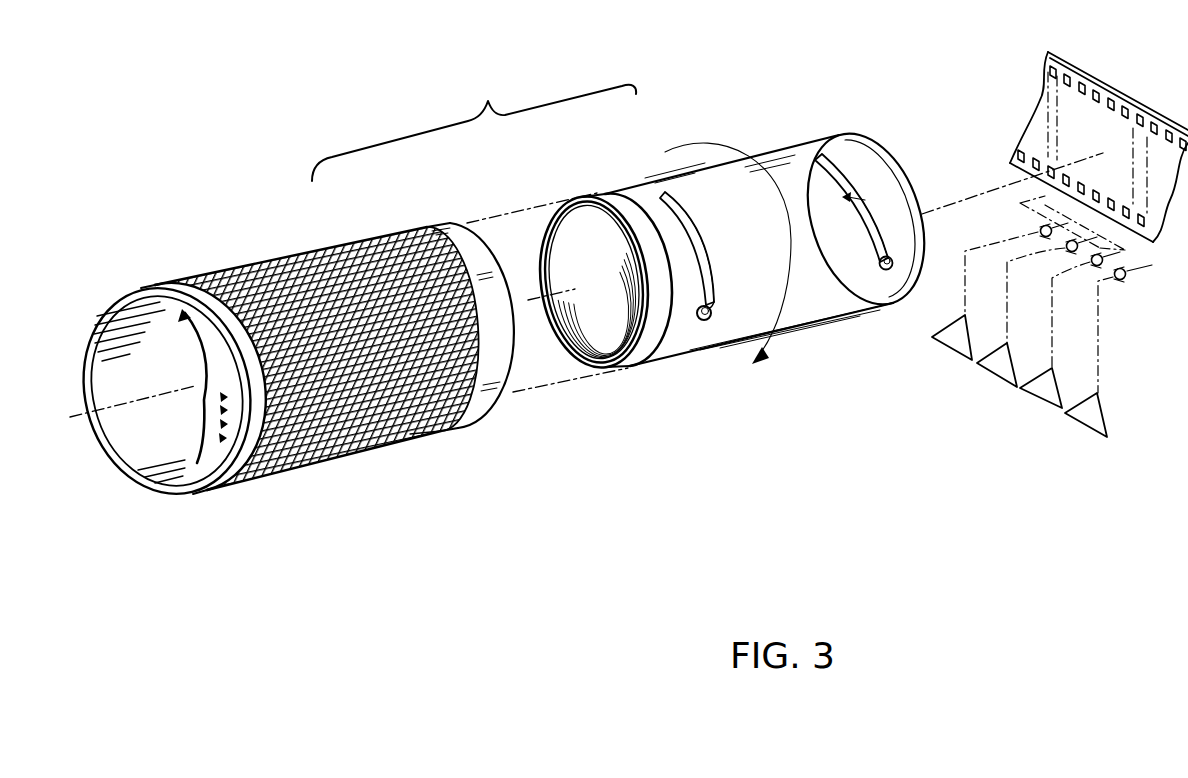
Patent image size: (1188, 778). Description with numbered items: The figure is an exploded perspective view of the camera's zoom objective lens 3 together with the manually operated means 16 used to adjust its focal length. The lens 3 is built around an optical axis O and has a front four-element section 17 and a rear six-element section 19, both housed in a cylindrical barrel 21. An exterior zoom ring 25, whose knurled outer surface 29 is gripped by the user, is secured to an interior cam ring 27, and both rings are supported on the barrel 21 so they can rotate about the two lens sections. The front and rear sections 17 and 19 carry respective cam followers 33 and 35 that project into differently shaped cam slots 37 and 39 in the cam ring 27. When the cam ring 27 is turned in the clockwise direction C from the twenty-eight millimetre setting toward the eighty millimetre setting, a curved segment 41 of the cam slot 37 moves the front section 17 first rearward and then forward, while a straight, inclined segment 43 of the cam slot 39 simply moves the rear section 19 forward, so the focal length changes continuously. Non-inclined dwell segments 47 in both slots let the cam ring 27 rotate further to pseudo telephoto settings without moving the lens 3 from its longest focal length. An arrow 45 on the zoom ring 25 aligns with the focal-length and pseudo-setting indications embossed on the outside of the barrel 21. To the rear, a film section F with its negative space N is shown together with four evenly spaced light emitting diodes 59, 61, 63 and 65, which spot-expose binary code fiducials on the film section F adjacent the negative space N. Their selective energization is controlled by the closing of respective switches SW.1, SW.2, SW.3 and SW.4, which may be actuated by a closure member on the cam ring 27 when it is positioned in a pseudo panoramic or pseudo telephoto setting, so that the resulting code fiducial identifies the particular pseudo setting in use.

The objective lens 3 is at (600, 318).
The manually operated means 16 is at (488, 100).
The front four-element section 17 is at (584, 197).
The rear six-element section 19 is at (880, 147).
The cylindrical barrel 21 is at (490, 408).
The zoom ring 25 is at (355, 456).
The cam ring 27 is at (733, 349).
The knurled outer surface 29 is at (433, 438).
The cam follower 33 is at (706, 322).
The cam follower 35 is at (889, 270).
The cam slot 37 is at (706, 263).
The cam slot 39 is at (868, 201).
The curved segment 41 is at (719, 281).
The straight, inclined segment 43 is at (868, 237).
The arrow 45 is at (207, 325).
The dwell segments 47 is at (693, 223).
The light emitting diode 59 is at (1038, 230).
The light emitting diode 61 is at (1015, 260).
The light emitting diode 63 is at (1075, 270).
The light emitting diode 65 is at (1128, 277).
The optical axis O is at (533, 300).
The clockwise direction C is at (782, 342).
The film section F is at (1122, 97).
The negative space N is at (1075, 137).
The switch SW.1 is at (963, 352).
The switch SW.2 is at (1010, 380).
The switch SW.3 is at (1047, 405).
The switch SW.4 is at (1098, 432).